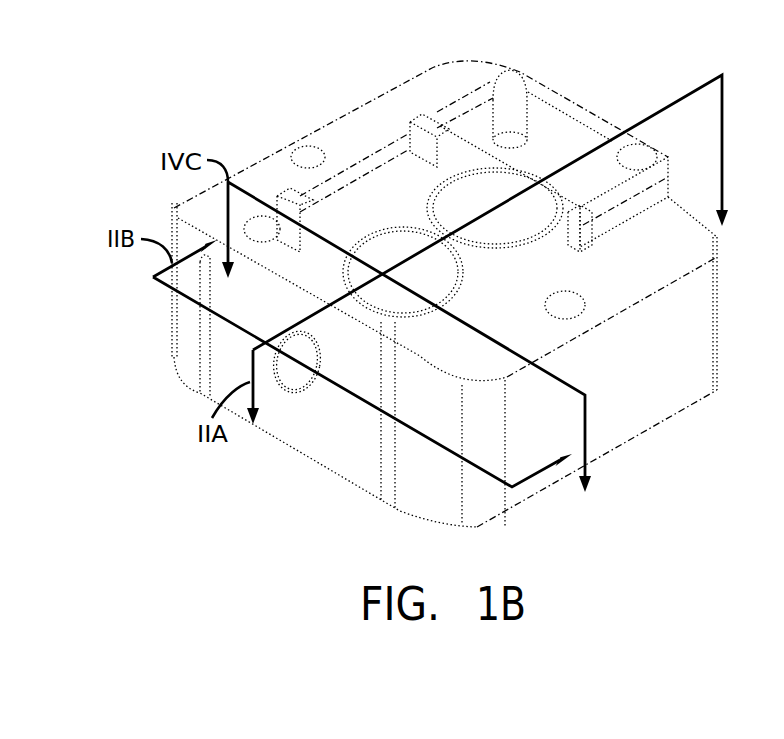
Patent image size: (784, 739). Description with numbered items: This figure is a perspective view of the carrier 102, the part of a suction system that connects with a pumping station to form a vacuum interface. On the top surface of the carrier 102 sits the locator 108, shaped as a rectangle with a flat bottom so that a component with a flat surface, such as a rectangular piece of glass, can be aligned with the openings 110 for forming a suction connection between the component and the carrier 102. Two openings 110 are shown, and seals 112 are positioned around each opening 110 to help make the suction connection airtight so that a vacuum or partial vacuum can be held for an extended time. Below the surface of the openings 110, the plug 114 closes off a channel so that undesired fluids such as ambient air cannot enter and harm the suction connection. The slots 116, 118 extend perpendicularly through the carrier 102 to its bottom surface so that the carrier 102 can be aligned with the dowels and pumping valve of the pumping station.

The carrier 102 is at (197, 86).
The locator 108 is at (507, 58).
The openings 110 is at (493, 207).
The seals 112 is at (462, 173).
The plug 114 is at (309, 393).
The slot 116 is at (587, 312).
The slot 118 is at (296, 151).